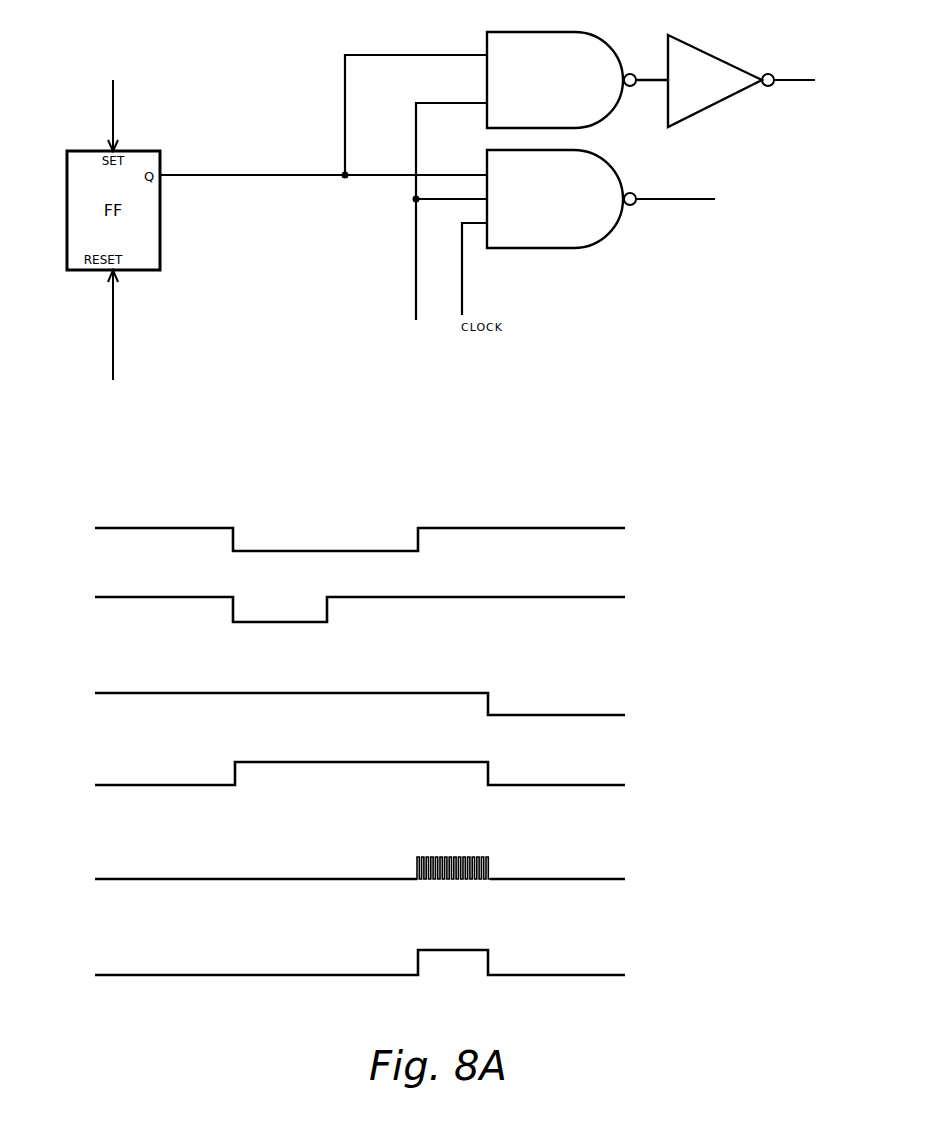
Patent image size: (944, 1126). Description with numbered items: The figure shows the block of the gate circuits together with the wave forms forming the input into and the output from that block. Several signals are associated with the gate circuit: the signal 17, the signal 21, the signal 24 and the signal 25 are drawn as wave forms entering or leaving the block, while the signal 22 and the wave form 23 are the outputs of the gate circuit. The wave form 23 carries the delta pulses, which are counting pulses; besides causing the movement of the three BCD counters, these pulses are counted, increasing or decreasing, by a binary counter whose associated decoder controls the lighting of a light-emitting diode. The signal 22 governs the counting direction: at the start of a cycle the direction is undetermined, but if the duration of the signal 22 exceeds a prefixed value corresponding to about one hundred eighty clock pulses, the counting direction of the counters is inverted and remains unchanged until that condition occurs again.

In FIG. 8, the signal 17 is at (442, 227).
In FIG. 8A, the signal 17 is at (334, 533).
In FIG. 8, the signal 21 is at (113, 102).
In FIG. 8A, the signal 21 is at (334, 604).
In FIG. 8, the signal 22 is at (796, 94).
In FIG. 8A, the signal 22 is at (334, 967).
In FIG. 8, the wave form 23 is at (694, 199).
In FIG. 8A, the wave form 23 is at (334, 855).
In FIG. 8, the signal 24 is at (113, 339).
In FIG. 8A, the signal 24 is at (334, 698).
In FIG. 8, the signal 25 is at (323, 128).
In FIG. 8A, the signal 25 is at (334, 778).